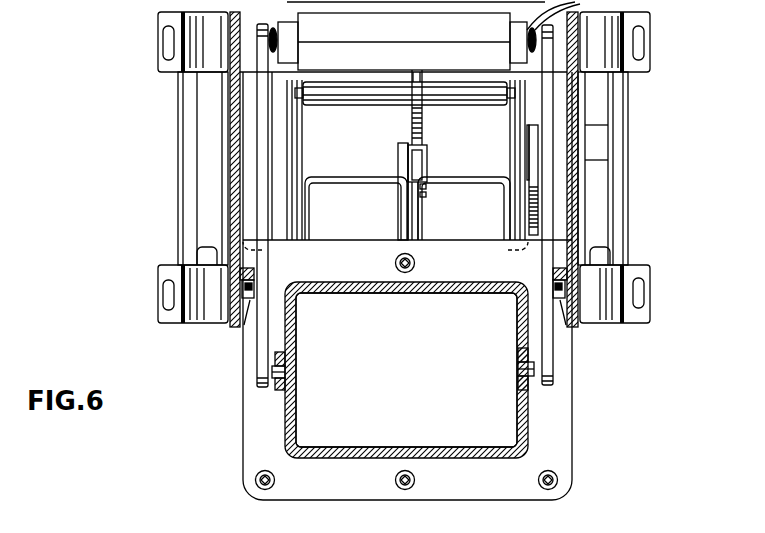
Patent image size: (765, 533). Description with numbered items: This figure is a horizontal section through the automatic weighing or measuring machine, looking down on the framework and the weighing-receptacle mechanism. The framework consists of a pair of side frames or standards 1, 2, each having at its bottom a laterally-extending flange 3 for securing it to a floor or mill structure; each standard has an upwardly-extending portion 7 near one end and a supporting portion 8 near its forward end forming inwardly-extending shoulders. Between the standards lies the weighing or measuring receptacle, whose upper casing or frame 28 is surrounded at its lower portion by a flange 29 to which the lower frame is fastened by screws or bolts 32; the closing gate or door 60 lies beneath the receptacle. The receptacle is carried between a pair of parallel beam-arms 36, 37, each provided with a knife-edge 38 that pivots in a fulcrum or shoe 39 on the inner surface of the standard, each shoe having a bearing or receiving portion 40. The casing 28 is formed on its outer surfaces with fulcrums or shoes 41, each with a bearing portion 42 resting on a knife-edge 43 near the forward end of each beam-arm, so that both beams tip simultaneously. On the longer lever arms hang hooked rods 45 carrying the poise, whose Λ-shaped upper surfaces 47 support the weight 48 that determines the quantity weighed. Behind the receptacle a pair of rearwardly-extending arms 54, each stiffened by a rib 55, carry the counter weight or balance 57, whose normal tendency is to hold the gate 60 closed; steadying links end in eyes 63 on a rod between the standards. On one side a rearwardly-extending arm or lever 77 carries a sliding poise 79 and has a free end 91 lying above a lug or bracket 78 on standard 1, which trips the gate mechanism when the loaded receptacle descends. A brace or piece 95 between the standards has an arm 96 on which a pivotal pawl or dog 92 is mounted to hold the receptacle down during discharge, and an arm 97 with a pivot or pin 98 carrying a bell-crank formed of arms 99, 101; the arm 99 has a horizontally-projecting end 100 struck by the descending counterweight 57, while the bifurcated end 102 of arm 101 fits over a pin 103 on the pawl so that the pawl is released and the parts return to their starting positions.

The side frame or standard 1 is at (628, 106).
The side frame or standard 2 is at (178, 110).
The laterally-extending flange 3 is at (158, 30).
The upwardly-extending portion 7 is at (404, 42).
The supporting portion 8 is at (401, 294).
The upper casing or frame 28 is at (416, 290).
The flange 29 is at (469, 509).
The screws or bolts 32 is at (415, 262).
The beam-arm 36 is at (550, 101).
The beam-arm 37 is at (262, 118).
The knife-edge 38 is at (254, 276).
The fulcrum or shoe 39 is at (258, 294).
The bearing or receiving portion 40 is at (245, 323).
The fulcrum or shoe 41 is at (290, 356).
The bearing or receiving portion 42 is at (290, 373).
The knife-edge 43 is at (290, 364).
The link or hooked rod 45 is at (273, 30).
The Λ-shaped upper surface 47 is at (298, 29).
The weight 48 is at (404, 41).
The rearwardly-extending arm 54 is at (294, 133).
The rib 55 is at (299, 149).
The counter weight or balance 57 is at (446, 108).
The closing gate or door 60 is at (406, 370).
The eye 63 is at (290, 118).
The rearwardly-extending arm or lever 77 is at (532, 175).
The lug or bracket 78 is at (527, 130).
The poise or counterweight 79 is at (538, 208).
The free end 91 is at (528, 134).
The pivotal pawl or dog 92 is at (418, 214).
The brace or piece 95 is at (337, 180).
The arm 96 is at (398, 204).
The arm 97 is at (398, 145).
The pivot or pin 98 is at (427, 150).
The bell-crank arm 99 is at (412, 120).
The horizontally-projecting end 100 is at (416, 72).
The bell-crank arm 101 is at (425, 170).
The bifurcated end 102 is at (426, 196).
The pin 103 is at (426, 187).